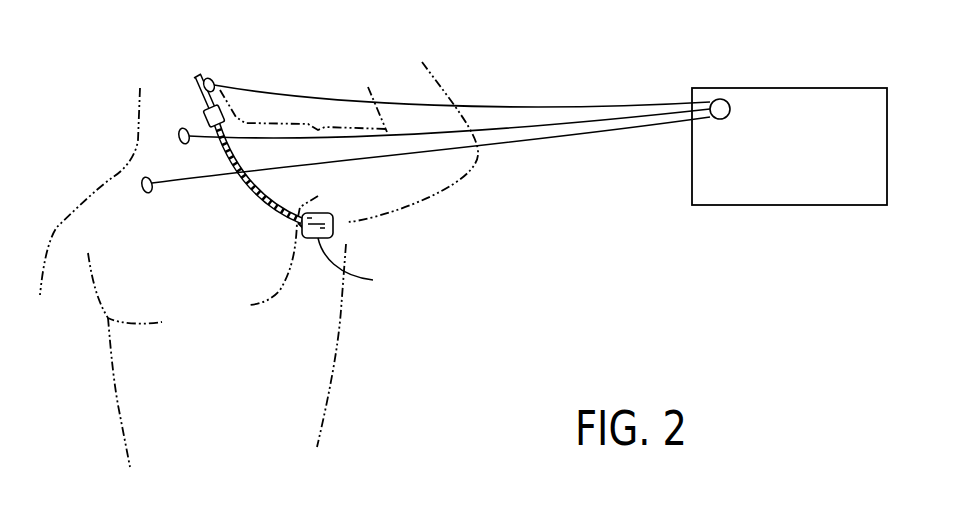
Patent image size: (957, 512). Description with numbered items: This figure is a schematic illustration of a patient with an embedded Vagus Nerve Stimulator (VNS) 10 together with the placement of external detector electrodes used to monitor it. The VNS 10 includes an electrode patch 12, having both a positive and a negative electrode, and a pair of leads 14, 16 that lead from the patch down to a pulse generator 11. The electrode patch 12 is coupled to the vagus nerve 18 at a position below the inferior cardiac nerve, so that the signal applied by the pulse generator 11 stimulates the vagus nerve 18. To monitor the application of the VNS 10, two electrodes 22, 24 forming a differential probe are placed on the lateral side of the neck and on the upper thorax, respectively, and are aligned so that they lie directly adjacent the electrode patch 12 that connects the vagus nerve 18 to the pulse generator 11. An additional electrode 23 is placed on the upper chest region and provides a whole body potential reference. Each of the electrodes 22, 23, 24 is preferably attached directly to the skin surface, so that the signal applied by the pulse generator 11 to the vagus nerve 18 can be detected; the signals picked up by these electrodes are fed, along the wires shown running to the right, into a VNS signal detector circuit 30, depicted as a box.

The Vagus Nerve Stimulator 10 is at (348, 234).
The pulse generator 11 is at (356, 265).
The electrode patch 12 is at (218, 117).
The lead 14 is at (254, 188).
The lead 16 is at (204, 92).
The vagus nerve 18 is at (195, 92).
The electrode 22 is at (178, 135).
The electrode 23 is at (141, 185).
The electrode 24 is at (214, 82).
The VNS signal detector circuit 30 is at (756, 215).